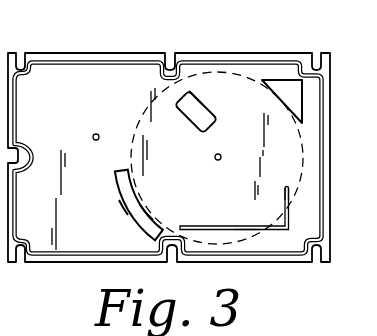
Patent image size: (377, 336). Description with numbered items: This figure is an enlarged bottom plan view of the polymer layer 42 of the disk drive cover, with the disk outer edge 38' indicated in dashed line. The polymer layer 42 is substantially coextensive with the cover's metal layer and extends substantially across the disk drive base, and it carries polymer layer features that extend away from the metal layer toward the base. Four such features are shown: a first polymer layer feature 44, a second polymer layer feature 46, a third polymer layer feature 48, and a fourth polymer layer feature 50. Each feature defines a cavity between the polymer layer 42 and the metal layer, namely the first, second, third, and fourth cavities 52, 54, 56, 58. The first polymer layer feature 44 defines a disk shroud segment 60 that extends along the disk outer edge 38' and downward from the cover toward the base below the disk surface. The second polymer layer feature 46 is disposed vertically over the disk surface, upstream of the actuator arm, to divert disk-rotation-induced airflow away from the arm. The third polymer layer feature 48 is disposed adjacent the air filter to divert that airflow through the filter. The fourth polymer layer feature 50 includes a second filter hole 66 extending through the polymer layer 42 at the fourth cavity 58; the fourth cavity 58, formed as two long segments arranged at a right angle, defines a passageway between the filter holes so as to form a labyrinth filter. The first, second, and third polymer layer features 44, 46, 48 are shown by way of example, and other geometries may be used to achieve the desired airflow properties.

The polymer layer 42 is at (84, 94).
The disk outer edge 38' is at (251, 158).
The first polymer layer feature 44 is at (117, 193).
The second polymer layer feature 46 is at (188, 117).
The third polymer layer feature 48 is at (283, 93).
The fourth polymer layer feature 50 is at (222, 225).
The first cavity 52 is at (123, 213).
The second cavity 54 is at (194, 89).
The third cavity 56 is at (292, 79).
The fourth cavity 58 is at (245, 231).
The disk shroud segment 60 is at (148, 225).
The second filter hole 66 is at (287, 186).